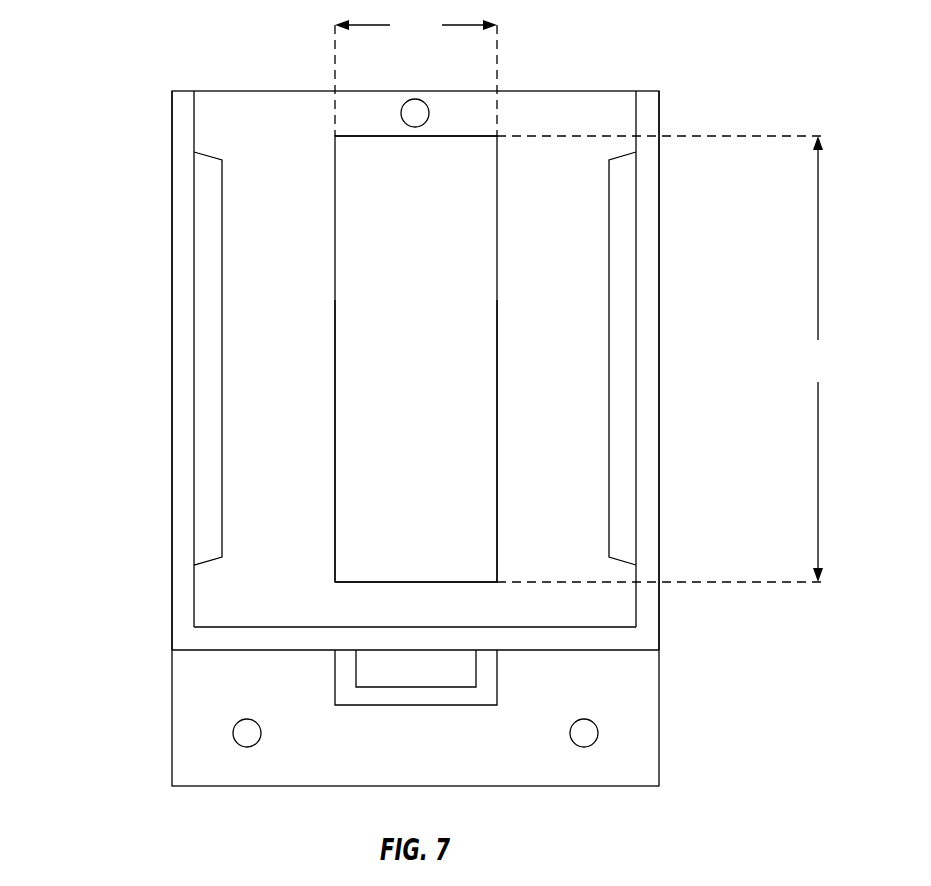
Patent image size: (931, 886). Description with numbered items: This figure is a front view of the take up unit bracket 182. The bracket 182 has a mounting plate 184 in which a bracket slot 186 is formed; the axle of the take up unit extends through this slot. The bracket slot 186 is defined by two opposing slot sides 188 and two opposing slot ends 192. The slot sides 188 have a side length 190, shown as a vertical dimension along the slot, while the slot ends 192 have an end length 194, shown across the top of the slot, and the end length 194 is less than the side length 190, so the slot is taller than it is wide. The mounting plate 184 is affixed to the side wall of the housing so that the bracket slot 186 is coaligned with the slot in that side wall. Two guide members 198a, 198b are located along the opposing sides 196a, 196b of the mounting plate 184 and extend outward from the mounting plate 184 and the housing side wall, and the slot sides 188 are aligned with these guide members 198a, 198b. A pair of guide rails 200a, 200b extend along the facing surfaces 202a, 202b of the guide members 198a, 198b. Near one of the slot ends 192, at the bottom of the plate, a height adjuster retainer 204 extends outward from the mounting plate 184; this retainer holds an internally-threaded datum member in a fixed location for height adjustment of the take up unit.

The bracket 182 is at (130, 36).
The mounting plate 184 is at (238, 582).
The bracket slot 186 is at (415, 359).
The slot sides 188 is at (333, 506).
The side length 190 is at (667, 359).
The slot ends 192 is at (463, 136).
The end length 194 is at (416, 73).
The opposing side of mounting plate 196a is at (172, 278).
The opposing side of mounting plate 196b is at (659, 278).
The guide member 198a is at (184, 494).
The guide member 198b is at (646, 494).
The guide rail 200a is at (208, 358).
The guide rail 200b is at (622, 360).
The facing surface 202a is at (194, 108).
The facing surface 202b is at (636, 108).
The height adjuster retainer 204 is at (485, 680).